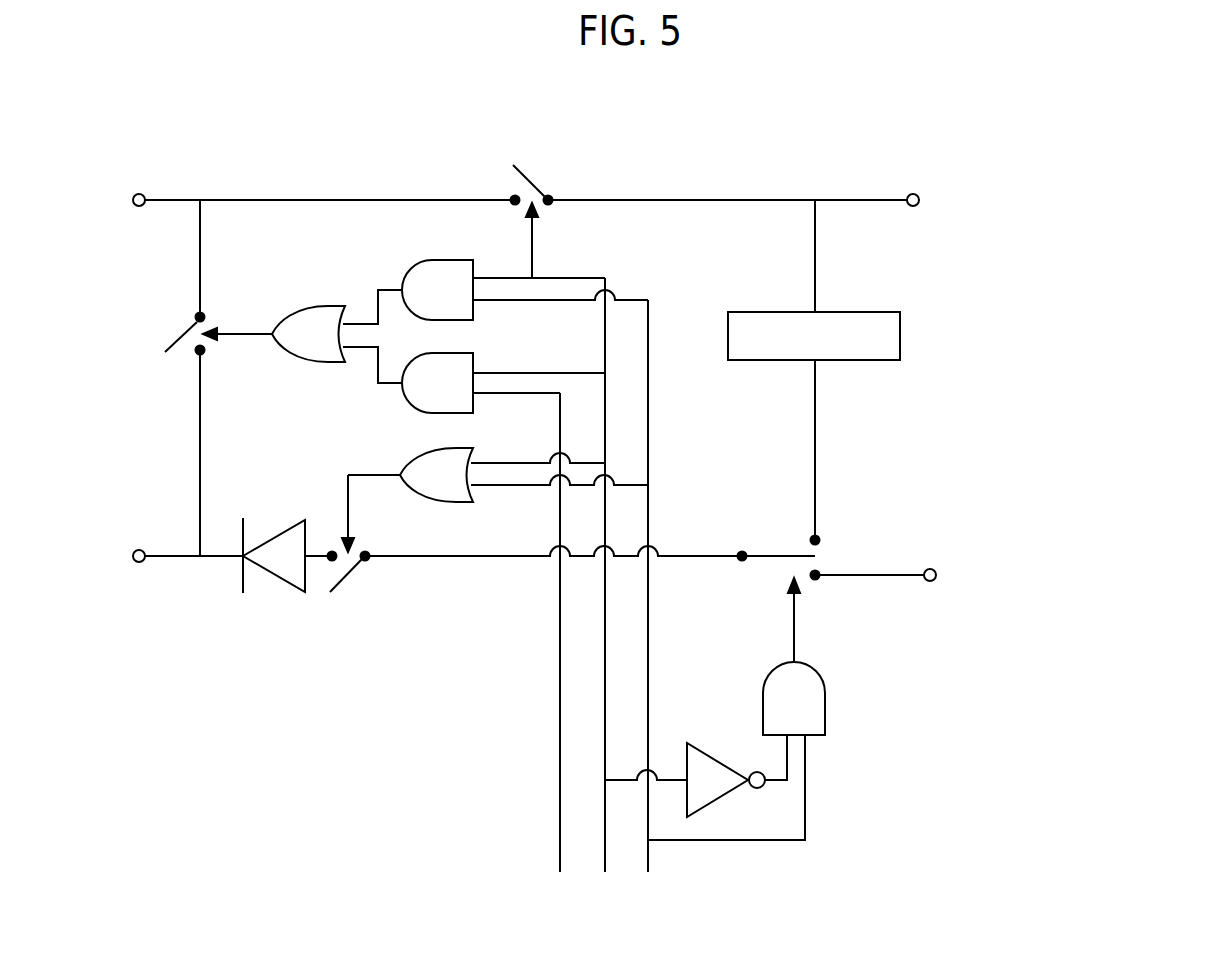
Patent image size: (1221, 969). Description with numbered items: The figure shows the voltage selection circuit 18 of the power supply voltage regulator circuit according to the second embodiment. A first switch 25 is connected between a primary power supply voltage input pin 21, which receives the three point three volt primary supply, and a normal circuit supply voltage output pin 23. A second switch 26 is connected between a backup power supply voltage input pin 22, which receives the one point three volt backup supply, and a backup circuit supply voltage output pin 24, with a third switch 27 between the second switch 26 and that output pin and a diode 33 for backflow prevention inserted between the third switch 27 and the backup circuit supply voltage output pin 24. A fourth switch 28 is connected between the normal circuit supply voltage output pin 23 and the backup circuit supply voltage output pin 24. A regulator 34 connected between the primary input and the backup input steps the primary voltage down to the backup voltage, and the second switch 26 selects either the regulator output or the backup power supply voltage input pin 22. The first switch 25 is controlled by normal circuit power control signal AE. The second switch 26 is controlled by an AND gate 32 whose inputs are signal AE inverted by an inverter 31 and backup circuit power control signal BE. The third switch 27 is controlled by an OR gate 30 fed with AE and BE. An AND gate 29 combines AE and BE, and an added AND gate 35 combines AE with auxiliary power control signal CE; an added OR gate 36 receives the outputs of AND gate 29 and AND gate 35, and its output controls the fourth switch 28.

The voltage selection circuit 18 is at (583, 122).
The primary power supply voltage input pin 21 is at (910, 195).
The backup power supply voltage input pin 22 is at (927, 568).
The normal circuit supply voltage output pin 23 is at (141, 193).
The backup circuit supply voltage output pin 24 is at (141, 549).
The first switch 25 is at (528, 178).
The second switch 26 is at (785, 556).
The third switch 27 is at (357, 585).
The fourth switch 28 is at (184, 337).
The AND gate 29 is at (425, 262).
The OR gate 30 is at (460, 503).
The inverter 31 is at (710, 745).
The AND gate 32 is at (826, 700).
The diode 33 is at (273, 536).
The regulator 34 is at (880, 312).
The AND gate 35 is at (405, 408).
The OR gate 36 is at (318, 306).